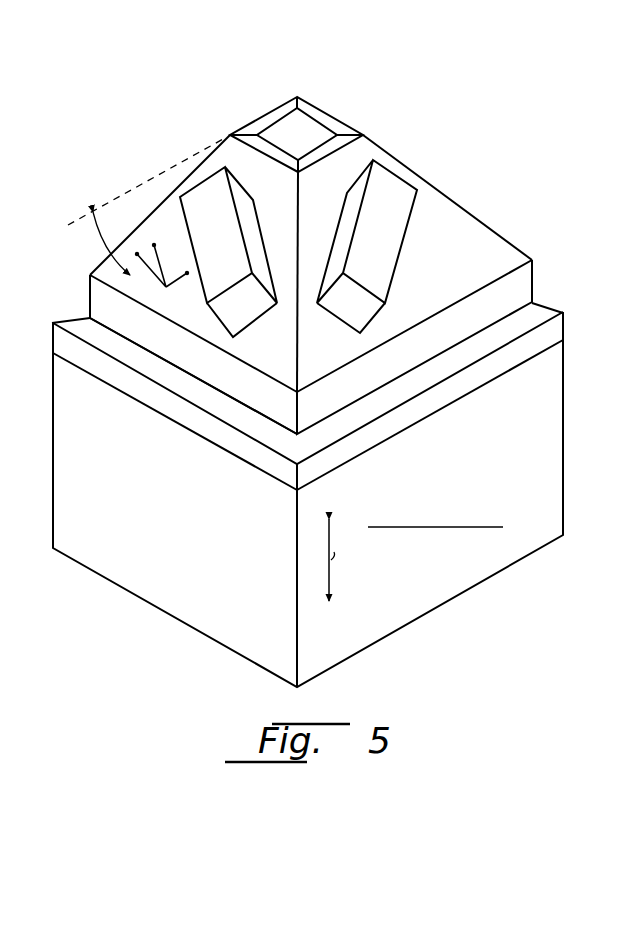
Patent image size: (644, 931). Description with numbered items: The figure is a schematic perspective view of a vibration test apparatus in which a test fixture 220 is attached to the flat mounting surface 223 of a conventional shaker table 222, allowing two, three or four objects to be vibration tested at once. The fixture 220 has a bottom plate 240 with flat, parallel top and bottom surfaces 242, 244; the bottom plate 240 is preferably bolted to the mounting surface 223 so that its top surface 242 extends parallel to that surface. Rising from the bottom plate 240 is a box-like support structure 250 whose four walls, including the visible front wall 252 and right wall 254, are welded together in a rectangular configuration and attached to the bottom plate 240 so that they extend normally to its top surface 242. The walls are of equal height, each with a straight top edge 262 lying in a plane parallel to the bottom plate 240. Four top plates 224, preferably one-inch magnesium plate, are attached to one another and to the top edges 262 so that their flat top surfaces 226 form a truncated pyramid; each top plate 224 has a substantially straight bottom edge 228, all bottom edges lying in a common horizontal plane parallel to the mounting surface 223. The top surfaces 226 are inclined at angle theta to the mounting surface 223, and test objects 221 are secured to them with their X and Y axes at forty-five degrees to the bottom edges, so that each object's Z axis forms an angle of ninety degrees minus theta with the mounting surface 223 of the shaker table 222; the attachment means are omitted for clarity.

The test fixture 220 is at (436, 146).
The test object 221 is at (232, 230).
The top surface 226 is at (466, 260).
The top plate 224 is at (458, 217).
The bottom edge 228 is at (105, 288).
The right wall 254 is at (520, 273).
The support structure 250 is at (513, 287).
The front wall 252 is at (100, 305).
The top edge 262 is at (147, 307).
The top surface 242 is at (543, 315).
The bottom plate 240 is at (563, 321).
The bottom surface 244 is at (537, 353).
The mounting surface 223 is at (517, 362).
The shaker table 222 is at (345, 513).